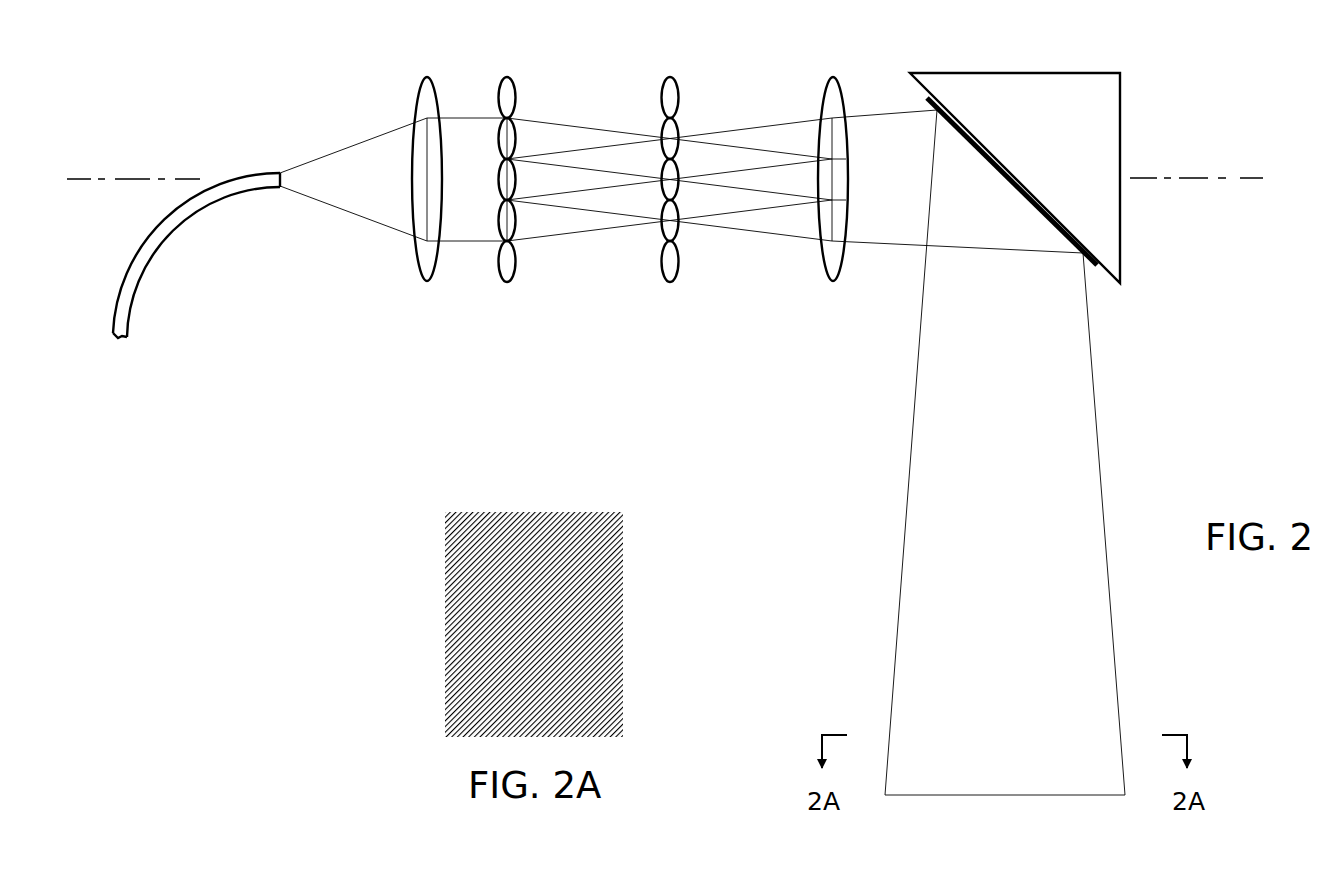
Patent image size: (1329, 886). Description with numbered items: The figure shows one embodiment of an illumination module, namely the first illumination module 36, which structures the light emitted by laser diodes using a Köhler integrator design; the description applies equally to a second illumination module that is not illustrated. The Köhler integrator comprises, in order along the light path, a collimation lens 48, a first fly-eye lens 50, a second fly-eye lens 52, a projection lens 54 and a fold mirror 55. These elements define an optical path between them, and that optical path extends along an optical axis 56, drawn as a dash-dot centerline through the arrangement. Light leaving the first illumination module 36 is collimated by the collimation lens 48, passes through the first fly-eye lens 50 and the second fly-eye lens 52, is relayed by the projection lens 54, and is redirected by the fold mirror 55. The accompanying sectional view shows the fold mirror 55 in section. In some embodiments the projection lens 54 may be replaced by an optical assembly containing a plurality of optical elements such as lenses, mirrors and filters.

The first illumination module 36 is at (176, 348).
The collimation lens 48 is at (427, 282).
The first fly-eye lens 50 is at (507, 77).
The second fly-eye lens 52 is at (670, 76).
The projection lens 54 is at (833, 282).
The fold mirror 55 is at (1121, 251).
The optical axis 56 is at (80, 177).